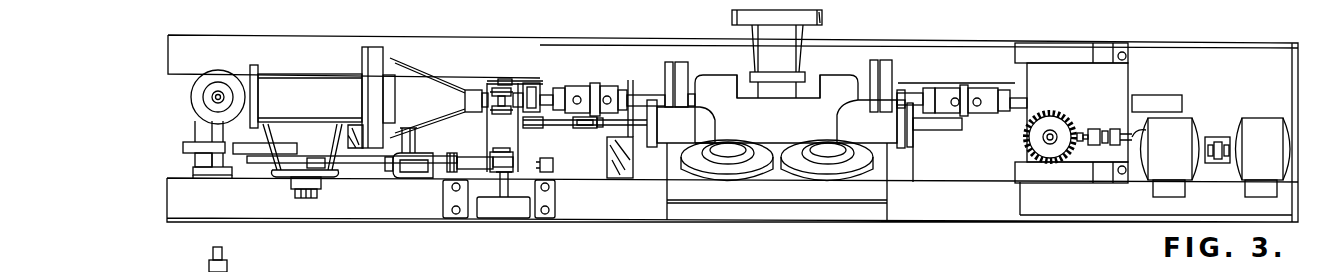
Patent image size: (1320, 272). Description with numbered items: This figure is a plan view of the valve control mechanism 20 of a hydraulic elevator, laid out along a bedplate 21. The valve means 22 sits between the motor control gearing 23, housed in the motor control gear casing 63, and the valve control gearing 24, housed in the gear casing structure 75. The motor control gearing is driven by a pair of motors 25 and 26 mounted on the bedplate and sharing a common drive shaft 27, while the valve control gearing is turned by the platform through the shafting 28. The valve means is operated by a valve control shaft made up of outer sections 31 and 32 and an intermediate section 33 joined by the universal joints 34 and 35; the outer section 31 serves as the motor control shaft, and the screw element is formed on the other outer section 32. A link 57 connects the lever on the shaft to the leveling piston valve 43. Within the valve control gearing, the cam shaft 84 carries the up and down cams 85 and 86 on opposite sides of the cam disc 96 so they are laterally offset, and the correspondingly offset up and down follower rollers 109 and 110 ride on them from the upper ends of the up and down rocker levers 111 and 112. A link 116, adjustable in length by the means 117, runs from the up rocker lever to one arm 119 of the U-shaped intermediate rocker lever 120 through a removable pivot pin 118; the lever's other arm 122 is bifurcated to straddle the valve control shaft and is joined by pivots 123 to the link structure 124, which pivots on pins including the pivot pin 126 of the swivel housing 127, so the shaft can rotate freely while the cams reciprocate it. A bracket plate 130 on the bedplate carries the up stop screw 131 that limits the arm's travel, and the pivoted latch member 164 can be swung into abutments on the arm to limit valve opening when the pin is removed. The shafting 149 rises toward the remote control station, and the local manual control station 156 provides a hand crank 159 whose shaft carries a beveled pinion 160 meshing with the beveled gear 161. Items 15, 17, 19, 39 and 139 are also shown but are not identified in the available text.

The roller 15 is at (826, 180).
The roller 17 is at (719, 183).
The inlet pipe flange 19 is at (808, 9).
The valve control mechanism 20 is at (945, 166).
The bedplate 21 is at (985, 225).
The valve means 22 is at (788, 124).
The motor control gearing 23 is at (1092, 94).
The valve control gearing 24 is at (321, 105).
The motor 25 is at (1186, 118).
The motor 26 is at (1263, 118).
The common drive shaft 27 is at (1136, 151).
The shafting 28 is at (212, 97).
The outer section 31 is at (1013, 117).
The outer section 32 is at (466, 99).
The intermediate section 33 is at (645, 92).
The universal joint 34 is at (963, 95).
The universal joint 35 is at (584, 88).
The inlet pipe 39 is at (738, 72).
The leveling piston valve 43 is at (652, 127).
The link 57 is at (600, 130).
The motor control gear casing 63 is at (1120, 78).
The gear casing structure 75 is at (331, 79).
The cam shaft 84 is at (306, 198).
The up cam 85 is at (380, 171).
The down cam 86 is at (245, 154).
The cam disc 96 is at (310, 152).
The up follower roller 109 is at (392, 168).
The down follower roller 110 is at (192, 157).
The up rocker lever 111 is at (412, 148).
The down rocker lever 112 is at (198, 175).
The link 116 is at (475, 160).
The length-varying means 117 is at (453, 153).
The removable pivot pin 118 is at (512, 150).
The arm 119 is at (498, 178).
The intermediate rocker lever 120 is at (512, 145).
The arm 122 is at (492, 84).
The pivot 123 is at (505, 79).
The link structure 124 is at (523, 80).
The pivot pin 126 is at (530, 124).
The swivel housing 127 is at (538, 85).
The bracket plate 130 is at (458, 220).
The up stop screw 131 is at (553, 160).
The switch 139 is at (223, 235).
The shafting 149 is at (1054, 133).
The manual control station 156 is at (1107, 125).
The hand crank 159 is at (1142, 132).
The beveled pinion 160 is at (1080, 141).
The beveled gear 161 is at (1044, 110).
The latch member 164 is at (507, 200).